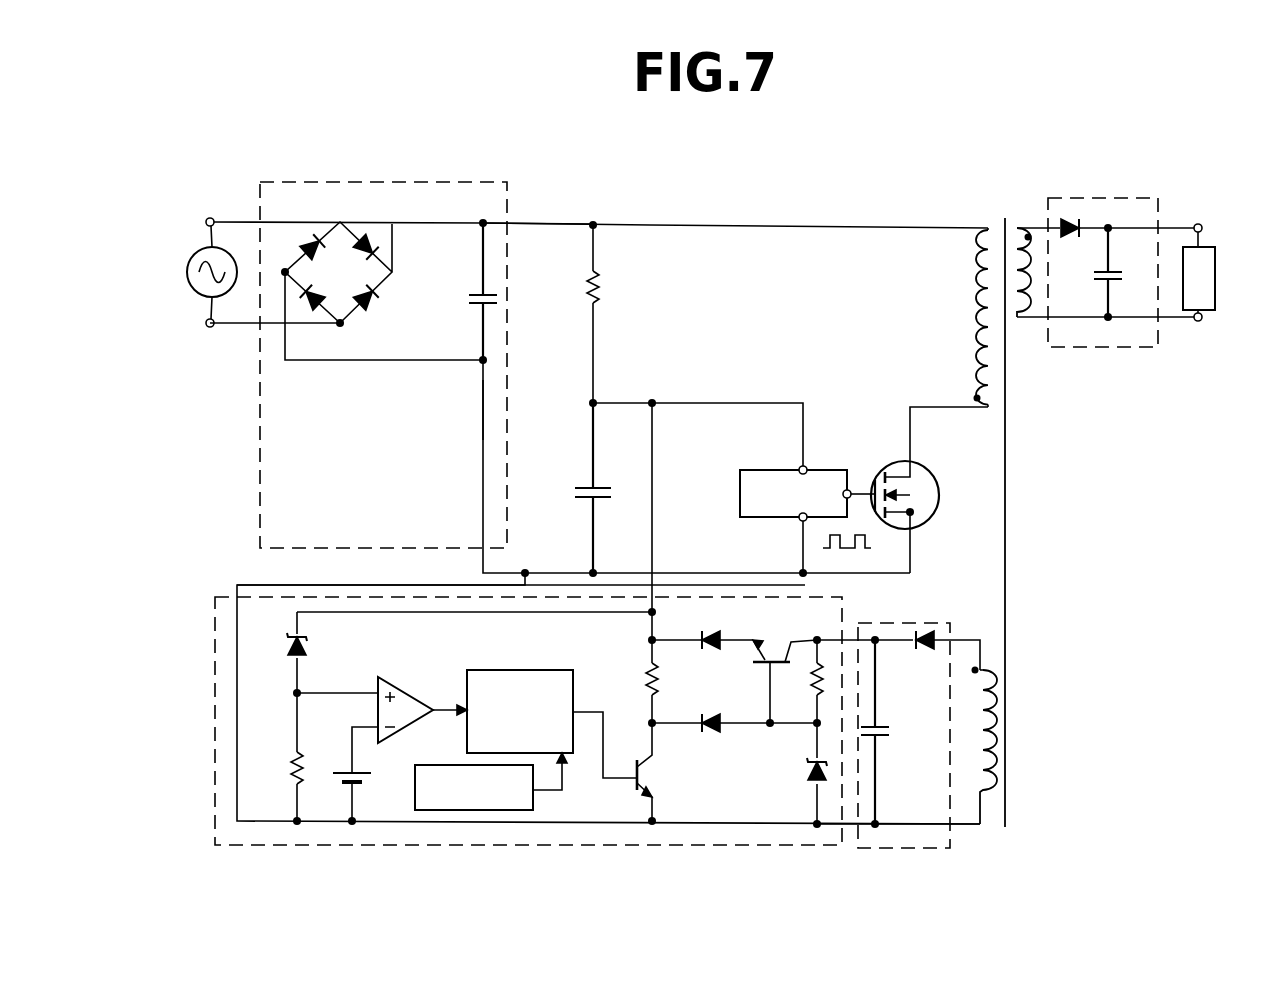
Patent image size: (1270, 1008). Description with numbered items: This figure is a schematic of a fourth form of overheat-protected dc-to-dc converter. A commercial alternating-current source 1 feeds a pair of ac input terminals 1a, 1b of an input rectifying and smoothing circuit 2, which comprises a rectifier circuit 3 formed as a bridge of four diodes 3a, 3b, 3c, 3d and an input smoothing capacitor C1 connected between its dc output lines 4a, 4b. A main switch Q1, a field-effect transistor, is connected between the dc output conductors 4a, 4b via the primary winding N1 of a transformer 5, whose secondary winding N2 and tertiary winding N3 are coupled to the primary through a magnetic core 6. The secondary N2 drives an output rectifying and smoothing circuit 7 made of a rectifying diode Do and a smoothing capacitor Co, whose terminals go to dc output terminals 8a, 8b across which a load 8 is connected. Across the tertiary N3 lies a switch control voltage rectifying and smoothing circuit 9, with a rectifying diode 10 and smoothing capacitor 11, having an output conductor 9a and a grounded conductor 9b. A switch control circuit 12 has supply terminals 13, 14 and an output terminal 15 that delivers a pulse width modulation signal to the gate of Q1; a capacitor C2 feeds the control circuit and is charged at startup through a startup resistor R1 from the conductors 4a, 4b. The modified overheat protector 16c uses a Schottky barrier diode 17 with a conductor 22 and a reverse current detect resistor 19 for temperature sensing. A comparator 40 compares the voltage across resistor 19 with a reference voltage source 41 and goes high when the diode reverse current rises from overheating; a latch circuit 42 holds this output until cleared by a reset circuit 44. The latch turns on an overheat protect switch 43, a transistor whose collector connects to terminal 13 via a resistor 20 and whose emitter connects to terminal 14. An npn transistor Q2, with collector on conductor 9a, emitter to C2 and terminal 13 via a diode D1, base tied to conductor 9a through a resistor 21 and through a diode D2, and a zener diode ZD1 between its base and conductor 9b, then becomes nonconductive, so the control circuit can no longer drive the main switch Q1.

The commercial alternating-current source 1 is at (187, 272).
The ac input terminal 1a is at (212, 216).
The ac input terminal 1b is at (210, 327).
The input rectifying and smoothing circuit 2 is at (372, 182).
The rectifier circuit 3 is at (375, 282).
The diode 3a is at (360, 238).
The diode 3b is at (360, 316).
The diode 3c is at (318, 280).
The diode 3d is at (305, 242).
The dc output line 4a is at (534, 222).
The dc output line 4b is at (480, 409).
The input smoothing capacitor C1 is at (477, 306).
The startup resistor R1 is at (600, 300).
The capacitor C2 is at (578, 488).
The switch control circuit 12 is at (738, 496).
The supply voltage input terminal 13 is at (799, 466).
The supply voltage input terminal 14 is at (800, 520).
The output terminal 15 is at (850, 526).
The main switch Q1 is at (924, 465).
The transformer 5 is at (1063, 494).
The magnetic core 6 is at (1008, 440).
The primary winding N1 is at (978, 294).
The secondary winding N2 is at (1019, 322).
The tertiary winding N3 is at (991, 774).
The output rectifying and smoothing circuit 7 is at (1160, 200).
The rectifying diode Do is at (1129, 252).
The smoothing capacitor Co is at (1113, 271).
The load 8 is at (1217, 272).
The dc output terminal 8a is at (1204, 212).
The dc output terminal 8b is at (1198, 321).
The switch control voltage rectifying and smoothing circuit 9 is at (922, 622).
The output conductor 9a is at (850, 636).
The conductor 9b is at (851, 827).
The rectifying diode 10 is at (919, 649).
The smoothing capacitor 11 is at (880, 740).
The overheat protector 16c is at (396, 847).
The Schottky barrier diode 17 is at (305, 646).
The reverse current detect resistor 19 is at (290, 752).
The resistor 20 is at (663, 681).
The resistor 21 is at (813, 694).
The conductor 22 is at (409, 613).
The diode D1 is at (700, 633).
The diode D2 is at (714, 732).
The zener diode ZD1 is at (806, 770).
The transistor Q2 is at (762, 650).
The comparator 40 is at (413, 698).
The reference voltage source 41 is at (362, 775).
The latch circuit 42 is at (488, 669).
The overheat protect switch 43 is at (627, 788).
The reset circuit 44 is at (441, 765).